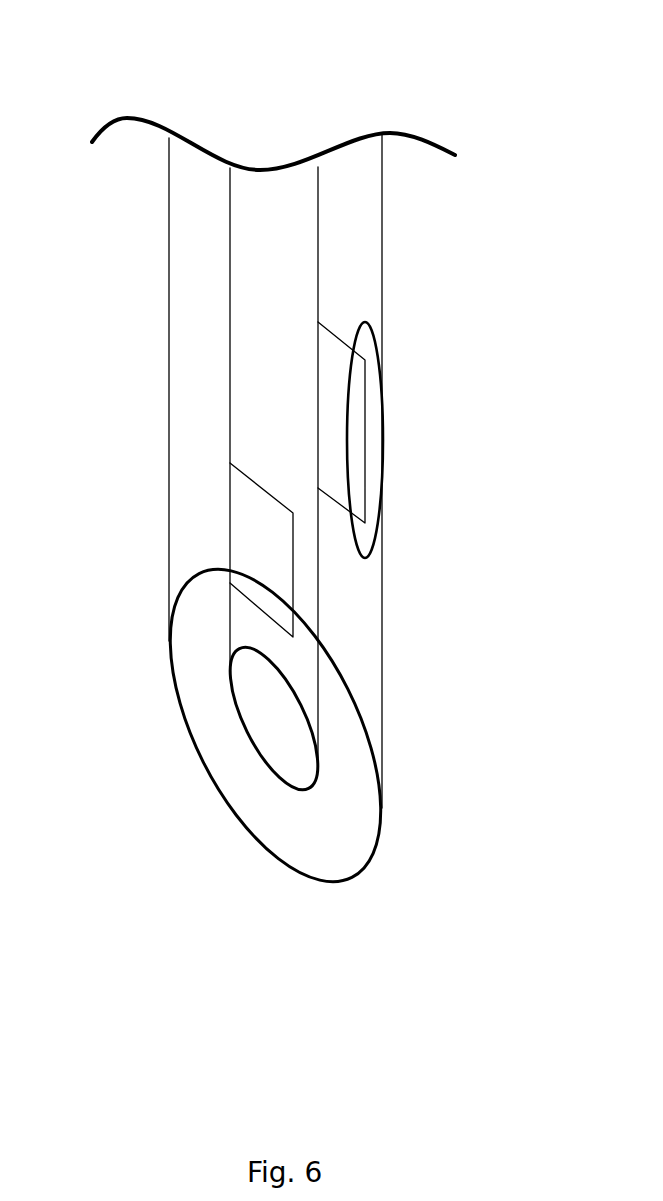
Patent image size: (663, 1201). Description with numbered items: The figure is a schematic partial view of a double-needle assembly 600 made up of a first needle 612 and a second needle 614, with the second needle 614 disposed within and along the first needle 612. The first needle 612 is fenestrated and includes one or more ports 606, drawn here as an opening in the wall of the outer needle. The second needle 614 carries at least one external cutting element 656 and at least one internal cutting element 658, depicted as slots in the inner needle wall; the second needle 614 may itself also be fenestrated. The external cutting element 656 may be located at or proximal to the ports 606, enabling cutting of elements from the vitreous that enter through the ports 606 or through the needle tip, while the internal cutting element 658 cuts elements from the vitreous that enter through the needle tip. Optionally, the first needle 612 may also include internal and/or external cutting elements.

The double-needle assembly 600 is at (294, 472).
The first needle 612 is at (400, 283).
The second needle 614 is at (213, 393).
The external cutting element 656 is at (332, 425).
The internal cutting element 658 is at (252, 547).
The port 606 is at (377, 457).